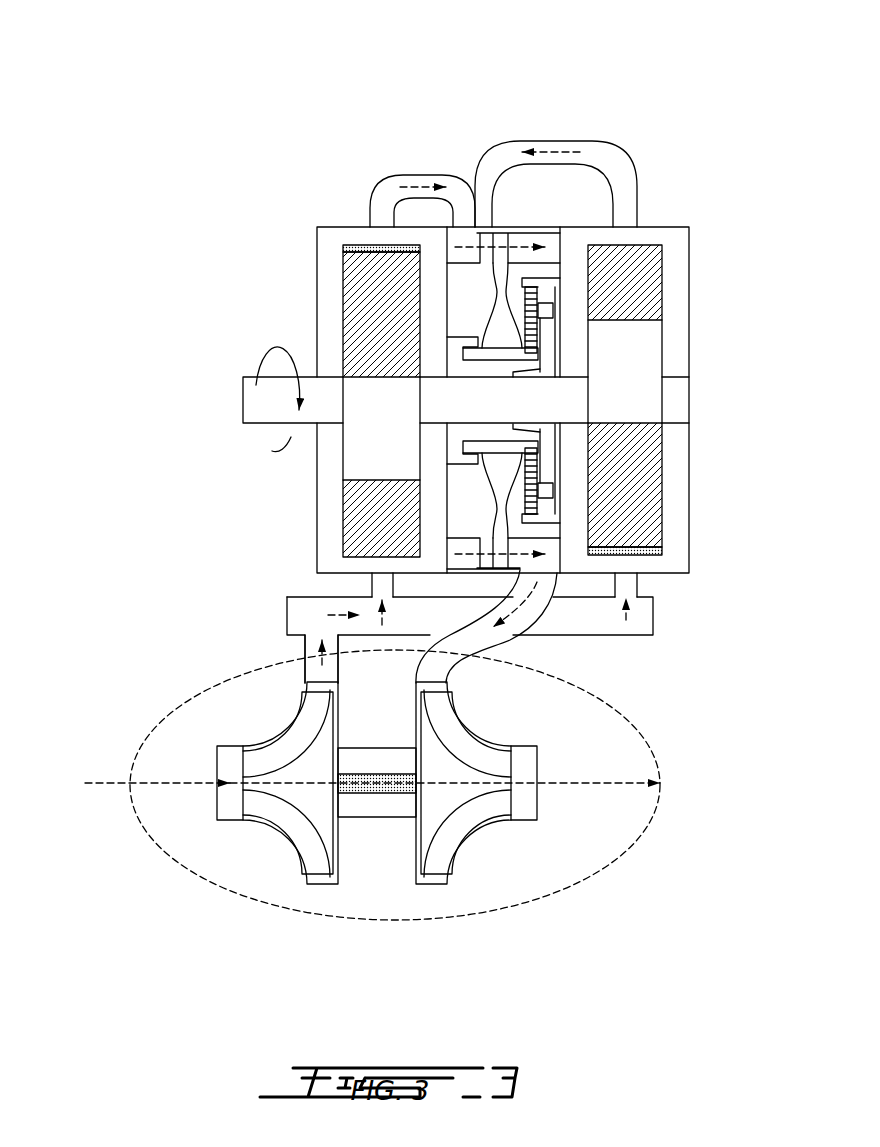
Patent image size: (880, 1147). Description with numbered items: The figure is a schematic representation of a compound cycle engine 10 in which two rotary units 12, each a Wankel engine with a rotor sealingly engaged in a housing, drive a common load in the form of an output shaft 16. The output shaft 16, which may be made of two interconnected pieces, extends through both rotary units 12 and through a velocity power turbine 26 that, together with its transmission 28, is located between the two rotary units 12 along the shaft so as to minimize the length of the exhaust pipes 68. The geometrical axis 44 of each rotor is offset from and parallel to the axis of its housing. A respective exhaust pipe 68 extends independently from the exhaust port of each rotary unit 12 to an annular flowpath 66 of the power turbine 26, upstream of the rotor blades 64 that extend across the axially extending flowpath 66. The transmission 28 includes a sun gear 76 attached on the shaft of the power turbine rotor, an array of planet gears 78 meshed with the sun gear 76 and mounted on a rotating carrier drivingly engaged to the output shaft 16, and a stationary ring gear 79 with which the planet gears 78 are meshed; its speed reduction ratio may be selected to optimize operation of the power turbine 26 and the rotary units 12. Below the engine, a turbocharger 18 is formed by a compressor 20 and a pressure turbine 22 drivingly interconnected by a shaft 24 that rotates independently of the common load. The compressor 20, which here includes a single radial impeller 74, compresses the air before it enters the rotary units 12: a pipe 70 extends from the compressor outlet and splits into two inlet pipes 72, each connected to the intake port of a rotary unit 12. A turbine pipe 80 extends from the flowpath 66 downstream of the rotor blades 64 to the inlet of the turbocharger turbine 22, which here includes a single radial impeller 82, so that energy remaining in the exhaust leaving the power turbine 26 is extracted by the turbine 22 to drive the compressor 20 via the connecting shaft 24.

The compound cycle engine 10 is at (151, 155).
The rotary unit 12 is at (344, 245).
The output shaft 16 is at (256, 402).
The turbocharger 18 is at (243, 917).
The compressor 20 is at (293, 792).
The pressure turbine 22 is at (455, 800).
The shaft 24 is at (378, 785).
The power turbine 26 is at (494, 228).
The transmission 28 is at (558, 463).
The geometrical axis 44 is at (630, 410).
The rotor blades 64 is at (500, 258).
The annular flowpath 66 is at (547, 242).
The exhaust pipe 68 is at (473, 160).
The pipe 70 is at (295, 615).
The inlet pipe 72 is at (378, 583).
The radial impeller 74 is at (298, 822).
The sun gear 76 is at (537, 343).
The planet gears 78 is at (535, 305).
The ring gear 79 is at (533, 505).
The turbine pipe 80 is at (475, 630).
The radial impeller 82 is at (462, 752).